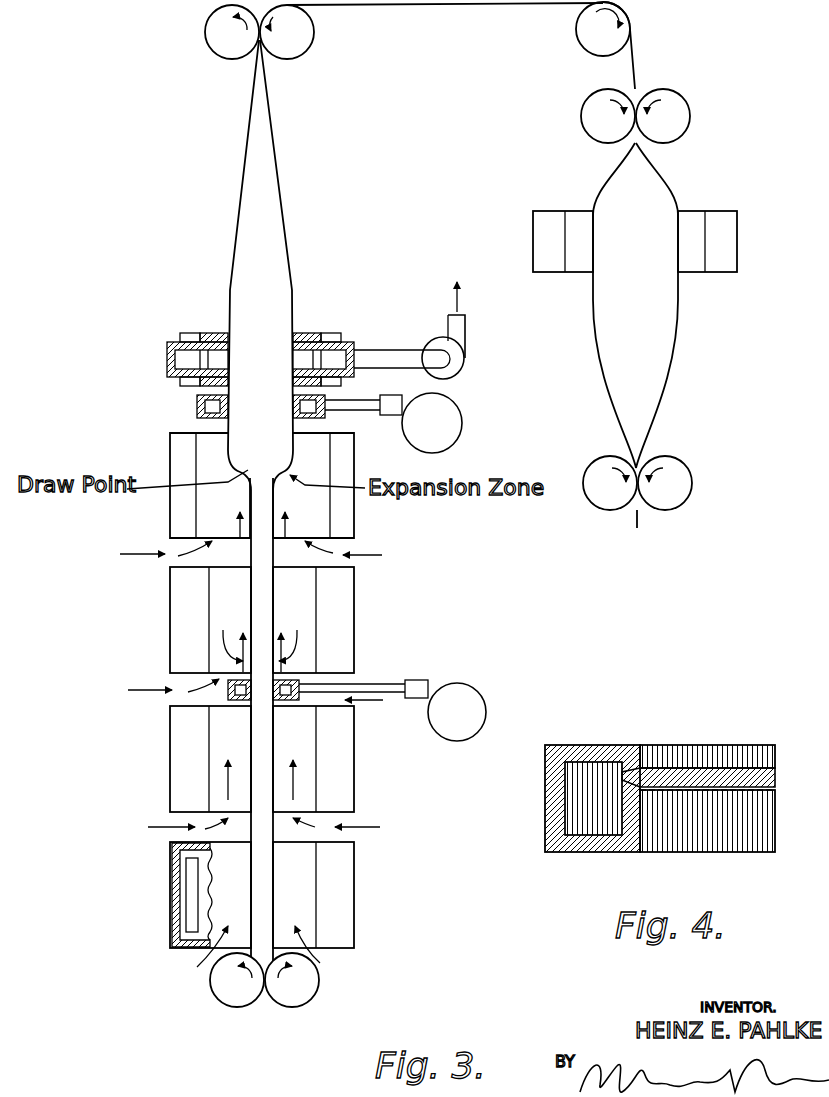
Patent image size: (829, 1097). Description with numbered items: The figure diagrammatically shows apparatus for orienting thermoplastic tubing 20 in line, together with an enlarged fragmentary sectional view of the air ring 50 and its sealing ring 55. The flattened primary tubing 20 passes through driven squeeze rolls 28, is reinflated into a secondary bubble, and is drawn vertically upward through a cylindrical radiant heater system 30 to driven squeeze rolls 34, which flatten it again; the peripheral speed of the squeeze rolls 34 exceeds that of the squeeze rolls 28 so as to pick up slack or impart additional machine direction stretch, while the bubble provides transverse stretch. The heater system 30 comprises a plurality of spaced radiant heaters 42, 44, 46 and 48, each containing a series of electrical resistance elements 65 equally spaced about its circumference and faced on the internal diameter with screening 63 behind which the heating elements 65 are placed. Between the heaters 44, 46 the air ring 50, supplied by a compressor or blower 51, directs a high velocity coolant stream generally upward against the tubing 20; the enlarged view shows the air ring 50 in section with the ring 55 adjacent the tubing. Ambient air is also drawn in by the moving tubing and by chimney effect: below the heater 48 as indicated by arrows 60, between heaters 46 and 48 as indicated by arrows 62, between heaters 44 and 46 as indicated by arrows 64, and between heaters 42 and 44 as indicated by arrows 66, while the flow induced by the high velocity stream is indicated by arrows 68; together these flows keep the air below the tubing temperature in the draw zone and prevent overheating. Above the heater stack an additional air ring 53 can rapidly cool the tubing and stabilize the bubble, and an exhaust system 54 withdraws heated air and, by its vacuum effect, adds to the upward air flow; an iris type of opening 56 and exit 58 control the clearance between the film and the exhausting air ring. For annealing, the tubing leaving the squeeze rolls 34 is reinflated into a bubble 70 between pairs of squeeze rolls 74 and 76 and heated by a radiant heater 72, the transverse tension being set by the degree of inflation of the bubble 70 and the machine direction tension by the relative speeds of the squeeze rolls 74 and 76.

In FIG. 3, the tubing 20 is at (230, 280).
In FIG. 3, the driven squeeze rolls 28 is at (228, 1000).
In FIG. 3, the cylindrical radiant heater system 30 is at (425, 656).
In FIG. 3, the driven squeeze rolls 34 is at (205, 33).
In FIG. 3, the radiant heater 42 is at (354, 518).
In FIG. 3, the radiant heater 44 is at (354, 632).
In FIG. 3, the radiant heater 46 is at (354, 782).
In FIG. 3, the radiant heater 48 is at (354, 897).
In FIG. 3, the air ring 50 is at (287, 701).
In FIG. 4, the air ring 50 is at (547, 808).
In FIG. 3, the blower 51 is at (452, 738).
In FIG. 3, the air ring 53 is at (197, 406).
In FIG. 3, the exhaust system 54 is at (387, 340).
In FIG. 3, the seal ring 55 is at (240, 701).
In FIG. 4, the seal ring 55 is at (667, 765).
In FIG. 3, the iris type of opening 56 is at (325, 381).
In FIG. 3, the exit 58 is at (305, 336).
In FIG. 3, the arrows 60 is at (215, 962).
In FIG. 3, the arrows 62 is at (152, 830).
In FIG. 3, the screening 63 is at (212, 892).
In FIG. 3, the arrows 64 is at (140, 692).
In FIG. 3, the electrical resistance elements 65 is at (190, 905).
In FIG. 3, the arrows 66 is at (140, 556).
In FIG. 3, the arrows 68 is at (261, 630).
In FIG. 3, the bubble 70 is at (672, 333).
In FIG. 3, the radiant heater 72 is at (725, 240).
In FIG. 3, the squeeze rolls 74 is at (581, 117).
In FIG. 3, the squeeze rolls 76 is at (602, 470).